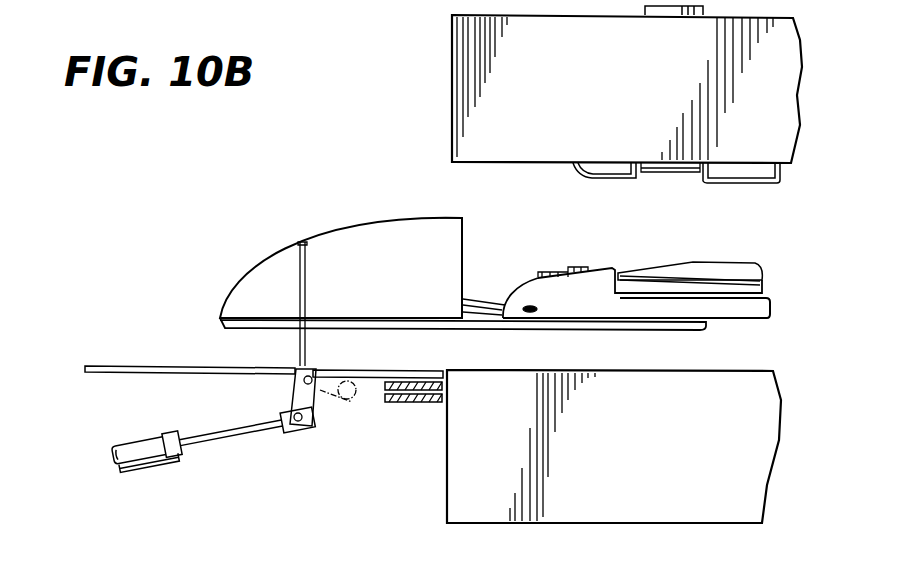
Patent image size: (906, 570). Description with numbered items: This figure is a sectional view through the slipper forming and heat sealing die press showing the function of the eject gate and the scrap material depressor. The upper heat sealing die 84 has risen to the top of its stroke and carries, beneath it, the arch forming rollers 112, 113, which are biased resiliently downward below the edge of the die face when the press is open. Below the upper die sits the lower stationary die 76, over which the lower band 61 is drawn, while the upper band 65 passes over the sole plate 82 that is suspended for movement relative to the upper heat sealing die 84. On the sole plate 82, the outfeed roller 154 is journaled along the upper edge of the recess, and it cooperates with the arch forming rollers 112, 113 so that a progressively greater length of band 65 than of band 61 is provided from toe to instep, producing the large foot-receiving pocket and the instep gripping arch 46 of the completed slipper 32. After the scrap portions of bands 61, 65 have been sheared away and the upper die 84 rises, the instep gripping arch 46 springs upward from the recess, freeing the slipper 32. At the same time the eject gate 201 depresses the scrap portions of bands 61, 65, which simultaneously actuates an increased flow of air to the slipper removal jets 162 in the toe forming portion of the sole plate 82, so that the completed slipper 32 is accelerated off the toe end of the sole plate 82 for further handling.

The upper heat sealing die 84 is at (621, 106).
The arch forming roller 112 is at (612, 172).
The arch forming roller 113 is at (747, 172).
The instep gripping arch 46 is at (465, 218).
The slipper 32 is at (424, 262).
The sole plate 82 is at (565, 293).
The outfeed roller 154 is at (705, 272).
The slipper removal jets 162 is at (537, 309).
The eject gate 201 is at (427, 349).
The band 65 is at (385, 386).
The band 61 is at (418, 404).
The lower stationary die 76 is at (653, 449).